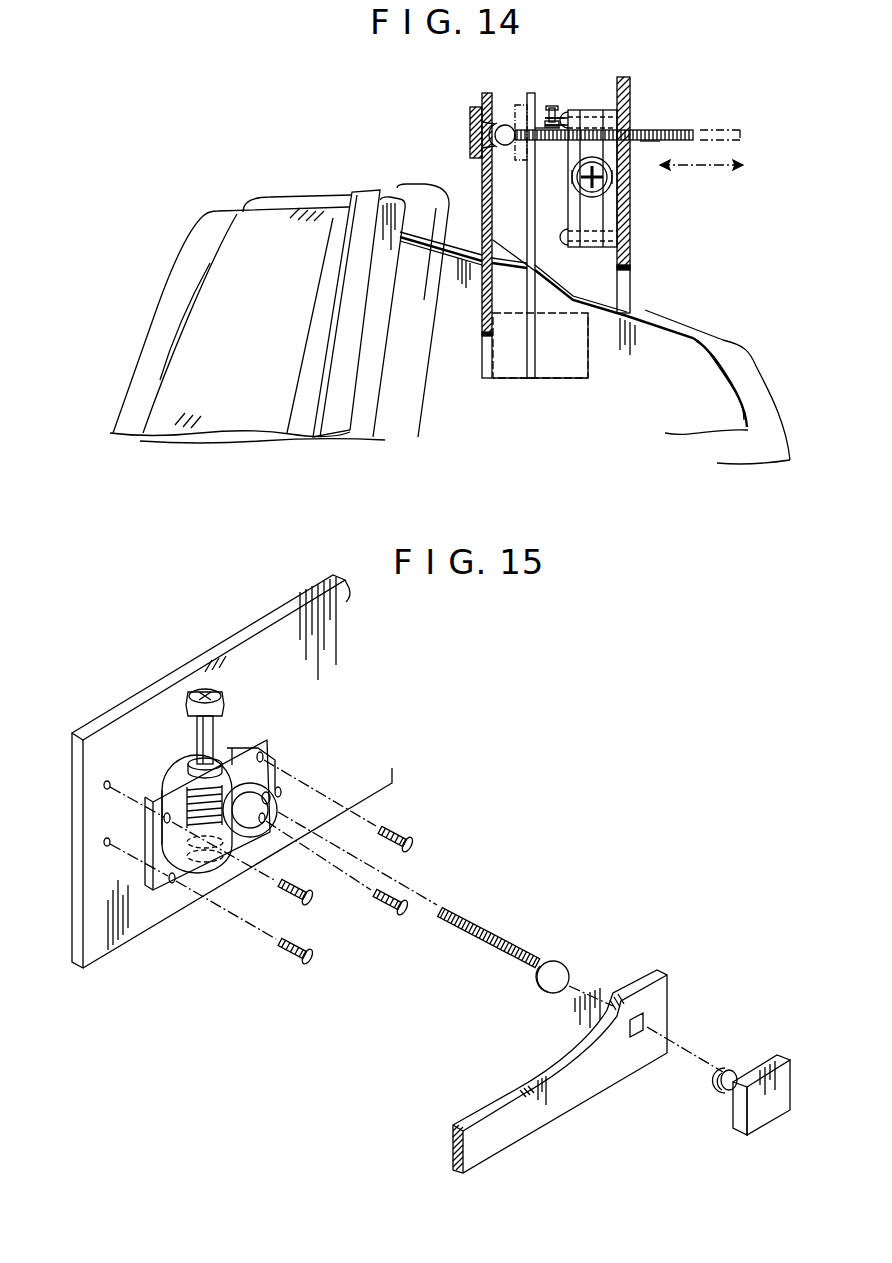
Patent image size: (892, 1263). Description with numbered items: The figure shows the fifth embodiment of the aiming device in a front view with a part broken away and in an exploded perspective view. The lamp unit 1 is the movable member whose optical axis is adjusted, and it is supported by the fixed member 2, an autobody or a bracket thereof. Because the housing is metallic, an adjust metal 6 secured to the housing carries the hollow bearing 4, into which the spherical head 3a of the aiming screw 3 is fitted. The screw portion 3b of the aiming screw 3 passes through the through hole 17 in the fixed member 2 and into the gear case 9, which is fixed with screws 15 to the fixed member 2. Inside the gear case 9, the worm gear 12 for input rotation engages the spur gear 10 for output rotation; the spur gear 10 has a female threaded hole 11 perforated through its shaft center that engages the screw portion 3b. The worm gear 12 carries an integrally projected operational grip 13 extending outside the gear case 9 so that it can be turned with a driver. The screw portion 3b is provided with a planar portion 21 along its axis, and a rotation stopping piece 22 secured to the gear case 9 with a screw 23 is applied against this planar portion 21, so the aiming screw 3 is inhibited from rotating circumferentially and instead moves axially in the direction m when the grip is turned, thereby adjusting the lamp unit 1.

In FIG. 14, the lamp unit 1 is at (183, 253).
In FIG. 14, the fixed member 2 is at (630, 245).
In FIG. 15, the fixed member 2 is at (249, 630).
In FIG. 14, the aiming screw 3 is at (503, 147).
In FIG. 15, the aiming screw 3 is at (510, 940).
In FIG. 15, the head of the aiming screw 3a is at (562, 976).
In FIG. 14, the screw portion of the aiming screw 3b is at (650, 142).
In FIG. 15, the screw portion of the aiming screw 3b is at (458, 940).
In FIG. 14, the hollow bearing 4 is at (496, 122).
In FIG. 15, the hollow bearing 4 is at (735, 1068).
In FIG. 14, the adjust metal 6 is at (492, 226).
In FIG. 15, the adjust metal 6 is at (480, 1110).
In FIG. 15, the gear case 9 is at (182, 766).
In FIG. 15, the spur gear 10 is at (252, 745).
In FIG. 15, the female threaded hole 11 is at (342, 909).
In FIG. 15, the worm gear 12 is at (166, 795).
In FIG. 14, the operational grip 13 is at (554, 120).
In FIG. 15, the operational grip 13 is at (198, 690).
In FIG. 15, the screws 15 is at (399, 826).
In FIG. 14, the through hole 17 is at (631, 133).
In FIG. 14, the planar portion 21 is at (545, 130).
In FIG. 15, the planar portion 21 is at (486, 934).
In FIG. 14, the rotation stopping piece 22 is at (549, 141).
In FIG. 15, the rotation stopping piece 22 is at (270, 797).
In FIG. 15, the screw 23 is at (281, 790).
In FIG. 14, the direction of movement m is at (711, 165).